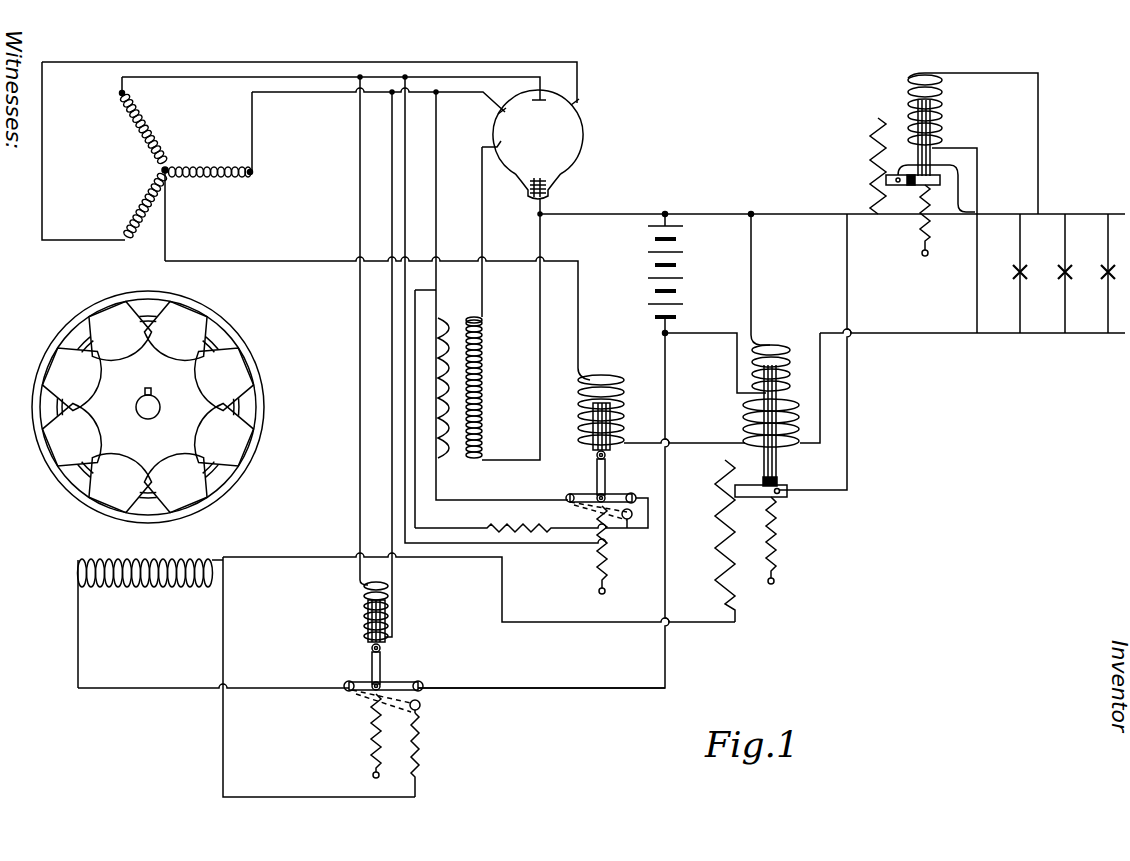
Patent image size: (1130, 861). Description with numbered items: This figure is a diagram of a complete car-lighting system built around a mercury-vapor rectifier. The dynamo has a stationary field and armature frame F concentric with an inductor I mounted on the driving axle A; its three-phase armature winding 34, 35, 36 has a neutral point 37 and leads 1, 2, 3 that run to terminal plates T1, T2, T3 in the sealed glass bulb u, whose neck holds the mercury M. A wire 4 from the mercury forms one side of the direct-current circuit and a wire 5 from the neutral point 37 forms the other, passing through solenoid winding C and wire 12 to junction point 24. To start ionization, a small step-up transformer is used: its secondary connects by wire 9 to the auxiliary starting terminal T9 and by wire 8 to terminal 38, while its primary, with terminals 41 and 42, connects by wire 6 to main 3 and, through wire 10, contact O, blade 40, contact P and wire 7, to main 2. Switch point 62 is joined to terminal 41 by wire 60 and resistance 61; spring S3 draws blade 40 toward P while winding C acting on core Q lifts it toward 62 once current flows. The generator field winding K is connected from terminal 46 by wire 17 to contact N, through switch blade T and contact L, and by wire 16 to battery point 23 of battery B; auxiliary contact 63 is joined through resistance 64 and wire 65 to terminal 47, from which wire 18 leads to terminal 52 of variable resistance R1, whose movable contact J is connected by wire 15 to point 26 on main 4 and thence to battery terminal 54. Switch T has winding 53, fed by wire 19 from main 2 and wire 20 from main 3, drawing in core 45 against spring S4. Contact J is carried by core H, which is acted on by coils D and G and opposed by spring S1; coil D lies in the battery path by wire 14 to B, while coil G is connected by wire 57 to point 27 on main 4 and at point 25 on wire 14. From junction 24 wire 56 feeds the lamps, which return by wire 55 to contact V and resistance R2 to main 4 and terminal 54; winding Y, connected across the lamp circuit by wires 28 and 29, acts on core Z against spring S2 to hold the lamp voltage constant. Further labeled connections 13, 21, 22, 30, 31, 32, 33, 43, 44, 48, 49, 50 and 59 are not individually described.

The lead 1 is at (112, 63).
The lead 2 is at (430, 70).
The lead 3 is at (252, 140).
The wire 4 is at (598, 214).
The wire 5 is at (290, 250).
The wire 6 is at (436, 176).
The wire 7 is at (405, 167).
The wire 8 is at (541, 320).
The wire 9 is at (482, 206).
The wire 10 is at (510, 492).
The wire 12 is at (694, 430).
The conductor 13 is at (822, 333).
The wire 14 is at (718, 324).
The wire 15 is at (847, 270).
The wire 16 is at (665, 394).
The wire 17 is at (138, 694).
The wire 18 is at (326, 550).
The wire 19 is at (360, 150).
The wire 20 is at (392, 168).
The conductor 21 is at (356, 81).
The conductor 22 is at (384, 96).
The battery terminal 23 is at (660, 336).
The junction point 24 is at (804, 452).
The point 25 is at (736, 380).
The point 26 is at (846, 222).
The point 27 is at (763, 206).
The wire 28 is at (977, 260).
The wire 29 is at (1038, 98).
The conductor 30 is at (994, 320).
The conductor 31 is at (1040, 212).
The conductor 32 is at (440, 96).
The conductor 33 is at (386, 87).
The armature winding 34 is at (215, 180).
The armature winding 35 is at (134, 138).
The armature winding 36 is at (142, 206).
The neutral point 37 is at (168, 166).
The terminal 38 is at (548, 208).
The switch blade 40 is at (614, 492).
The terminal 41 is at (450, 290).
The lower terminal 42 is at (432, 506).
The winding terminal 43 is at (482, 294).
The winding terminal 44 is at (482, 460).
The core 45 is at (386, 636).
The terminal 46 is at (74, 572).
The terminal 47 is at (250, 570).
The winding terminal 48 is at (125, 243).
The winding terminal 49 is at (118, 100).
The winding terminal 50 is at (252, 172).
The terminal 52 is at (738, 606).
The winding 53 is at (358, 588).
The battery terminal 54 is at (668, 212).
The lamp main 55 is at (1106, 212).
The lamp main 56 is at (926, 391).
The wire 57 is at (751, 272).
The armature rod 59 is at (371, 666).
The wire 60 is at (656, 512).
The resistance 61 is at (531, 515).
The switch point 62 is at (643, 491).
The auxiliary contact 63 is at (420, 706).
The resistance 64 is at (420, 744).
The wire 65 is at (426, 795).
The driving axle A is at (148, 407).
The battery B is at (677, 273).
The solenoid winding C is at (608, 412).
The coil D is at (744, 428).
The field and armature frame F is at (195, 409).
The coil G is at (782, 344).
The core H is at (786, 425).
The inductor I is at (122, 405).
The movable contact J is at (740, 500).
The generator field winding K is at (151, 623).
The contact L is at (424, 684).
The mercury M is at (552, 186).
The contact N is at (346, 694).
The contact O is at (597, 496).
The contact P is at (630, 520).
The core Q is at (612, 440).
The variable resistance R1 is at (712, 541).
The resistance R2 is at (862, 166).
The spring S1 is at (776, 540).
The spring S2 is at (934, 220).
The spring S3 is at (581, 550).
The spring S4 is at (361, 736).
The automatic switch T is at (392, 684).
The terminal plate T1 is at (566, 116).
The terminal plate T2 is at (537, 112).
The terminal plate T3 is at (515, 124).
The auxiliary starting terminal T9 is at (513, 146).
The glass bulb u is at (583, 132).
The moving contact V is at (930, 182).
The winding Y is at (908, 100).
The core Z is at (946, 128).